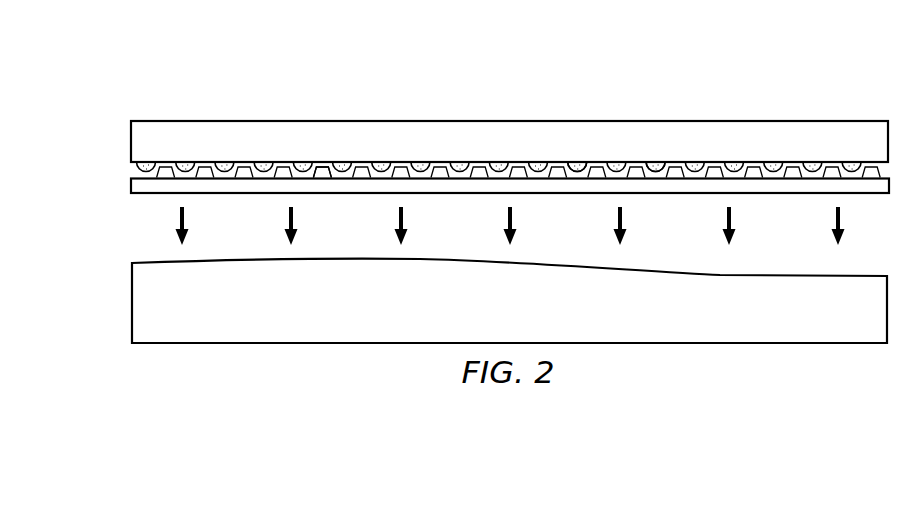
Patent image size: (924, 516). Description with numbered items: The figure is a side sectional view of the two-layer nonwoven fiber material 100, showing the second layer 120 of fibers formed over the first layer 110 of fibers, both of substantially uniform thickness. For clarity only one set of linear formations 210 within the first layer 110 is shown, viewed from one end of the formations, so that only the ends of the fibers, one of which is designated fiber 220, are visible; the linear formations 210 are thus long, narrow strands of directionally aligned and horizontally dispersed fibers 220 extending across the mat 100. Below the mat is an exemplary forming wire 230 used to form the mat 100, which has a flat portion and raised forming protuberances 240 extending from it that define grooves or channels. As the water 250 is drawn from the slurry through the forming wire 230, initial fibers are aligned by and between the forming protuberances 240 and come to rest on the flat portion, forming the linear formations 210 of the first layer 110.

The two-layer nonwoven fiber material 100 is at (543, 57).
The second layer 120 is at (126, 122).
The first layer 110 is at (126, 163).
The linear formations 210 is at (578, 159).
The fiber 220 is at (658, 167).
The forming wire 230 is at (131, 187).
The forming protuberance 240 is at (324, 174).
The water 250 is at (131, 304).